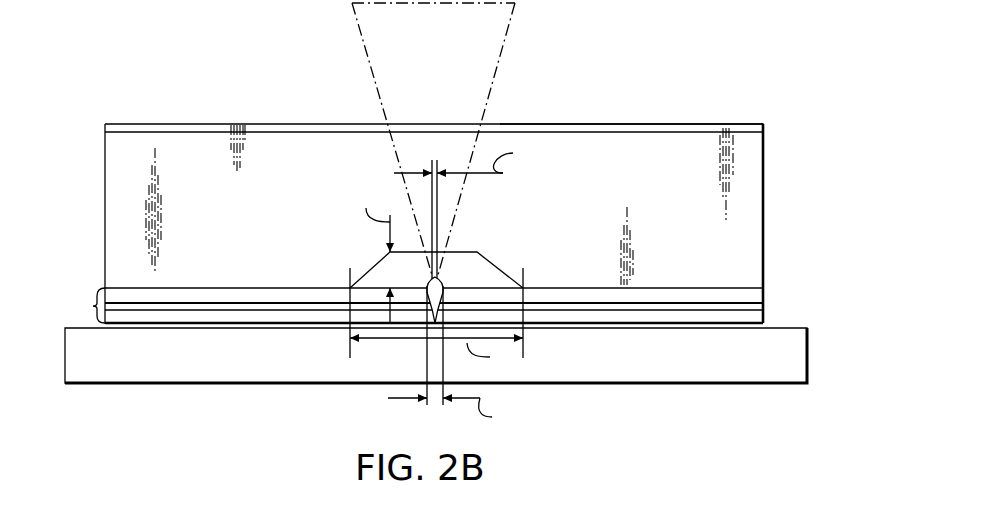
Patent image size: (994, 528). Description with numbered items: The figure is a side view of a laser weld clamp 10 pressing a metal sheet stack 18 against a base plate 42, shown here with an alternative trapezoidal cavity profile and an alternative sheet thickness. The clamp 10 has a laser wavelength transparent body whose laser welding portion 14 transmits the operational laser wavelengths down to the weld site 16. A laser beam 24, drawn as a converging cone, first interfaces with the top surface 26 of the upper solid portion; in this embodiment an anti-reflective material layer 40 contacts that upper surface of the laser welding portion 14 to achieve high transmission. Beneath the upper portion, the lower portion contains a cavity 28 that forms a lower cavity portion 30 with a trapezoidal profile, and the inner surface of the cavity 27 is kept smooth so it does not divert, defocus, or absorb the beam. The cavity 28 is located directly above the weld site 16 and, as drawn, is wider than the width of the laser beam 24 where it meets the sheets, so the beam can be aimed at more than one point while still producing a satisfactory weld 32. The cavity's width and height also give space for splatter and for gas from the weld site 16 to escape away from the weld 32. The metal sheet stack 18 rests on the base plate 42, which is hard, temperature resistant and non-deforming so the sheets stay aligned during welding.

The laser weld clamp 10 is at (731, 80).
The laser welding portion 14 is at (105, 174).
The weld site 16 is at (442, 280).
The metal sheet stack 18 is at (93, 306).
The laser beam 24 is at (505, 50).
The top surface of the upper portion 26 is at (197, 131).
The inner surface of the cavity 27 is at (465, 252).
The cavity 28 is at (400, 271).
The lower cavity portion 30 is at (487, 278).
The weld 32 is at (442, 280).
The anti-reflective material layer 40 is at (688, 124).
The base plate 42 is at (778, 326).